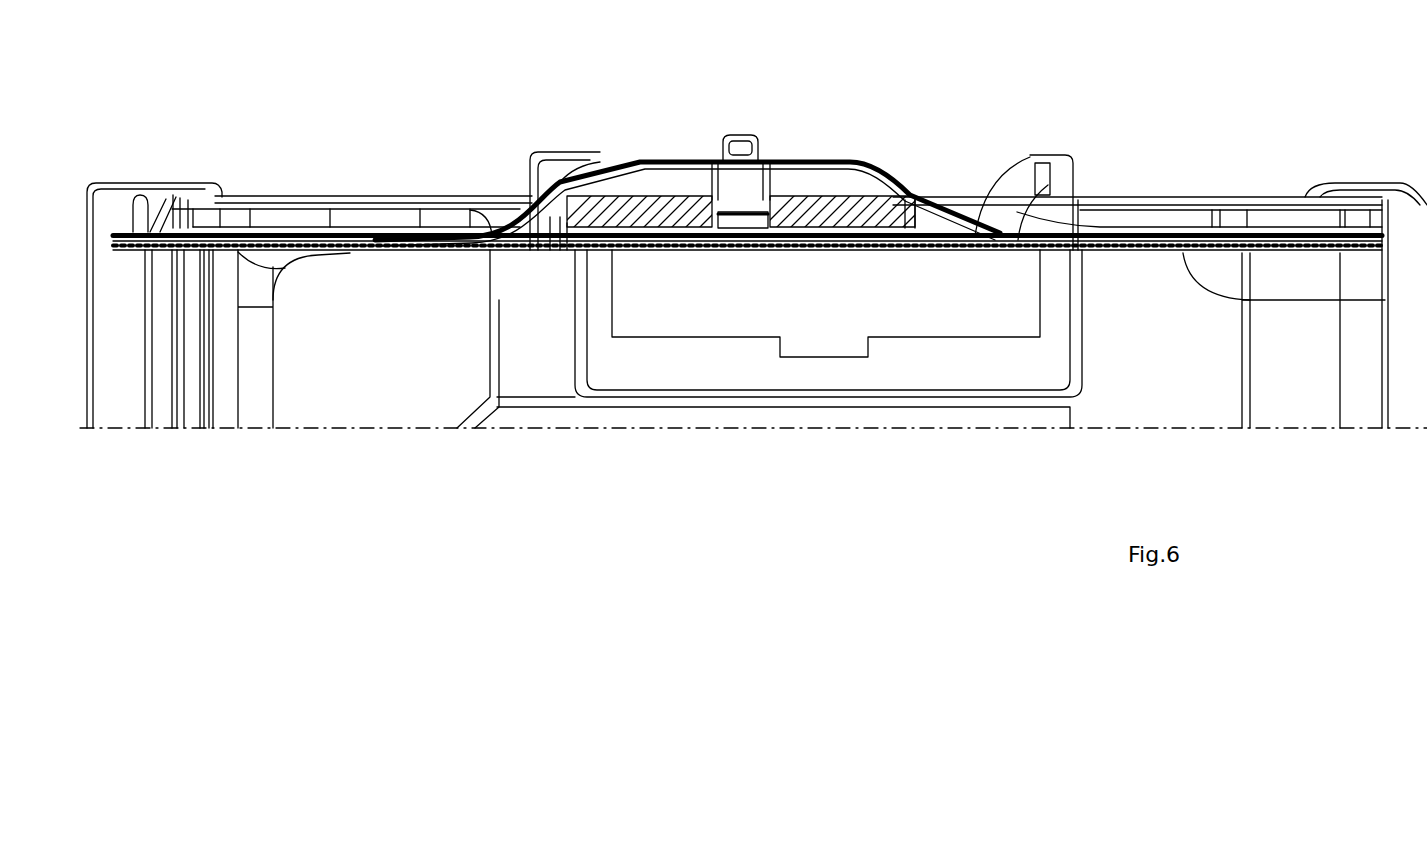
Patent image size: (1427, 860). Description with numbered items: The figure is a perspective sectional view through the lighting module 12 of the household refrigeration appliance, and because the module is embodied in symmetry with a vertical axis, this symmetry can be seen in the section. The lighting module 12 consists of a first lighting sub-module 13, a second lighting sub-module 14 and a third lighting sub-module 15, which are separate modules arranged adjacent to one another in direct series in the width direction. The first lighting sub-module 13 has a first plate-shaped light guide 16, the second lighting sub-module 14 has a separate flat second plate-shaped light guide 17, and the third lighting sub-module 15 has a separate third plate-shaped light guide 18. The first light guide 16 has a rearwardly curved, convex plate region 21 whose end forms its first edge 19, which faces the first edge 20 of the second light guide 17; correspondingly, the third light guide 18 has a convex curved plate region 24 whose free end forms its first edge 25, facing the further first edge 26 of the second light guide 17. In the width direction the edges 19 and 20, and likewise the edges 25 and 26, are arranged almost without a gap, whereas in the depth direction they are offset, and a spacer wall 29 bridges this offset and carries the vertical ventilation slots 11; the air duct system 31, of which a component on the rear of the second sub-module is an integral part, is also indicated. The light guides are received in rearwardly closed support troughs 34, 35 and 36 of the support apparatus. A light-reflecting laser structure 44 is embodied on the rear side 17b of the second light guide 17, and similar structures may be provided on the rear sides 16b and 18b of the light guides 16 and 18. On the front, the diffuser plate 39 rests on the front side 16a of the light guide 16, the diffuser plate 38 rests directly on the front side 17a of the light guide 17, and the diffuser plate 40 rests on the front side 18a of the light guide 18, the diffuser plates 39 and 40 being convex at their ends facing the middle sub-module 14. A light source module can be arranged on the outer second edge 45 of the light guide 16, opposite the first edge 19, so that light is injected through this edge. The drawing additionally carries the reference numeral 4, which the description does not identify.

The sensor device 4 is at (160, 432).
The ventilation slots 11 is at (545, 232).
The lighting module 12 is at (928, 292).
The first lighting sub-module 13 is at (340, 275).
The second lighting sub-module 14 is at (735, 285).
The third lighting sub-module 15 is at (1163, 272).
The first plate-shaped light guide 16 is at (352, 232).
The front side of the first light guide 16a is at (437, 252).
The rear side of the first light guide 16b is at (282, 232).
The second plate-shaped light guide 17 is at (683, 256).
The front side of the second light guide 17a is at (695, 226).
The rear side of the second light guide 17b is at (836, 157).
The third plate-shaped light guide 18 is at (1115, 195).
The front side of the third light guide 18a is at (1103, 254).
The rear side of the third light guide 18b is at (1150, 228).
The first edge of the first light guide 19 is at (585, 195).
The first edge of the second light guide 20 is at (545, 256).
The curved plate region 21 is at (487, 222).
The curved plate region 24 is at (985, 220).
The first edge of the third light guide 25 is at (912, 222).
The further first edge of the second light guide 26 is at (940, 255).
The spacer wall 29 is at (618, 256).
The air duct system 31 is at (838, 178).
The support trough 34 is at (322, 228).
The support trough 35 is at (662, 222).
The support trough 36 is at (1250, 215).
The diffuser plate 38 is at (793, 256).
The diffuser plate 39 is at (376, 258).
The diffuser plate 40 is at (1217, 255).
The light-reflecting structure 44 is at (782, 193).
The outer edge 45 is at (124, 252).